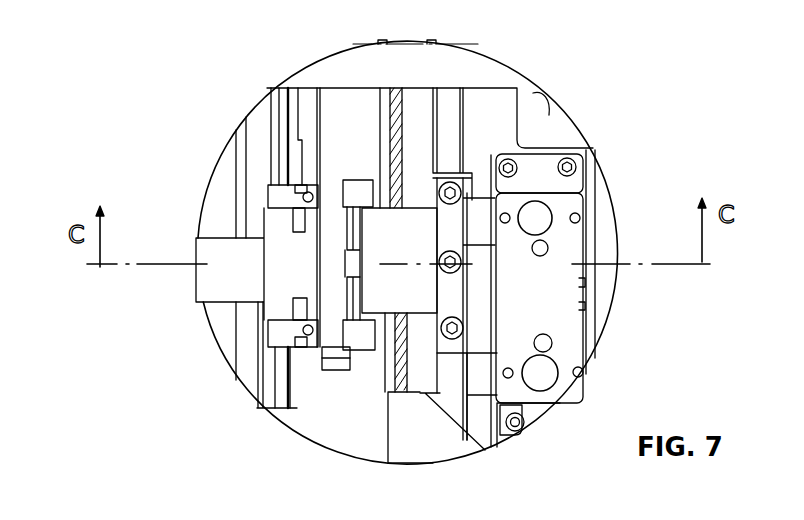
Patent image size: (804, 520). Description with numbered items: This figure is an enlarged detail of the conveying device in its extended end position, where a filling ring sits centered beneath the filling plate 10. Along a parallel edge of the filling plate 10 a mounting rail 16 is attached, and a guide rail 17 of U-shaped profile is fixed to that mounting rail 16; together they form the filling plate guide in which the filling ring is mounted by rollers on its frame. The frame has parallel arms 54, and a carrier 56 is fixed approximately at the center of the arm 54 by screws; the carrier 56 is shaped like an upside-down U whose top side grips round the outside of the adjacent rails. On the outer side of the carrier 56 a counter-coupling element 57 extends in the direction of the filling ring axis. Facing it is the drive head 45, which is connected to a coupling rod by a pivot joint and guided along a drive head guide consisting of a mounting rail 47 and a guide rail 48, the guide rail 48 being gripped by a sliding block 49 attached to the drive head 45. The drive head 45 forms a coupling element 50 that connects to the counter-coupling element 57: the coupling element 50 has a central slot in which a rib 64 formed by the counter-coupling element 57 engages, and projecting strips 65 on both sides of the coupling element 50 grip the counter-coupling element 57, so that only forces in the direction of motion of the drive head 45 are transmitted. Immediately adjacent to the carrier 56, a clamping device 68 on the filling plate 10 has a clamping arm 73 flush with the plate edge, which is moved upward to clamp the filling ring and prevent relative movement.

The filling plate 10 is at (488, 100).
The mounting rail 16 is at (435, 448).
The guide rail 17 is at (417, 97).
The drive head 45 is at (327, 305).
The mounting rail 47 is at (250, 378).
The guide rail 48 is at (284, 400).
The sliding block 49 is at (288, 219).
The coupling element 50 is at (345, 286).
The arm 54 is at (447, 97).
The carrier 56 is at (424, 302).
The counter-coupling element 57 is at (366, 231).
The rib 64 is at (353, 263).
The projecting strip 65 is at (365, 180).
The clamping device 68 is at (573, 250).
The clamping arm 73 is at (483, 275).